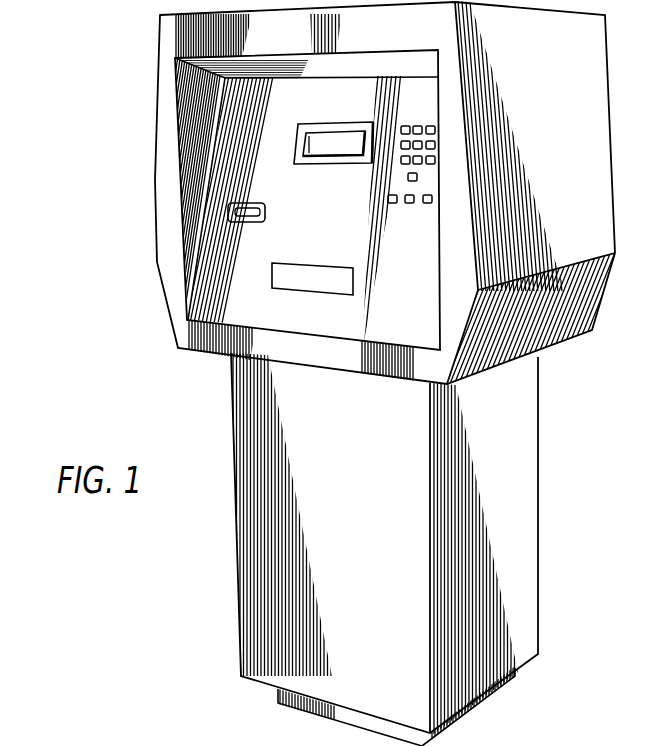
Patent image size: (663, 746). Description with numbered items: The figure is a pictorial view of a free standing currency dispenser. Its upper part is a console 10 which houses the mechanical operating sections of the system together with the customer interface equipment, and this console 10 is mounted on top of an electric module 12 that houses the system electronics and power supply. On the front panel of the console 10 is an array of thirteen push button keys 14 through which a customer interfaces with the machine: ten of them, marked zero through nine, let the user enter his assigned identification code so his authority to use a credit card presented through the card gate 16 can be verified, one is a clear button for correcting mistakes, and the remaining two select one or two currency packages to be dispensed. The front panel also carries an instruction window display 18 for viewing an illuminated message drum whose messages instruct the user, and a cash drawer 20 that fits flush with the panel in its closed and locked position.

The console 10 is at (155, 252).
The electric module 12 is at (538, 465).
The push button keys 14 is at (408, 207).
The card gate 16 is at (243, 223).
The instruction window display 18 is at (330, 165).
The cash drawer 20 is at (313, 262).